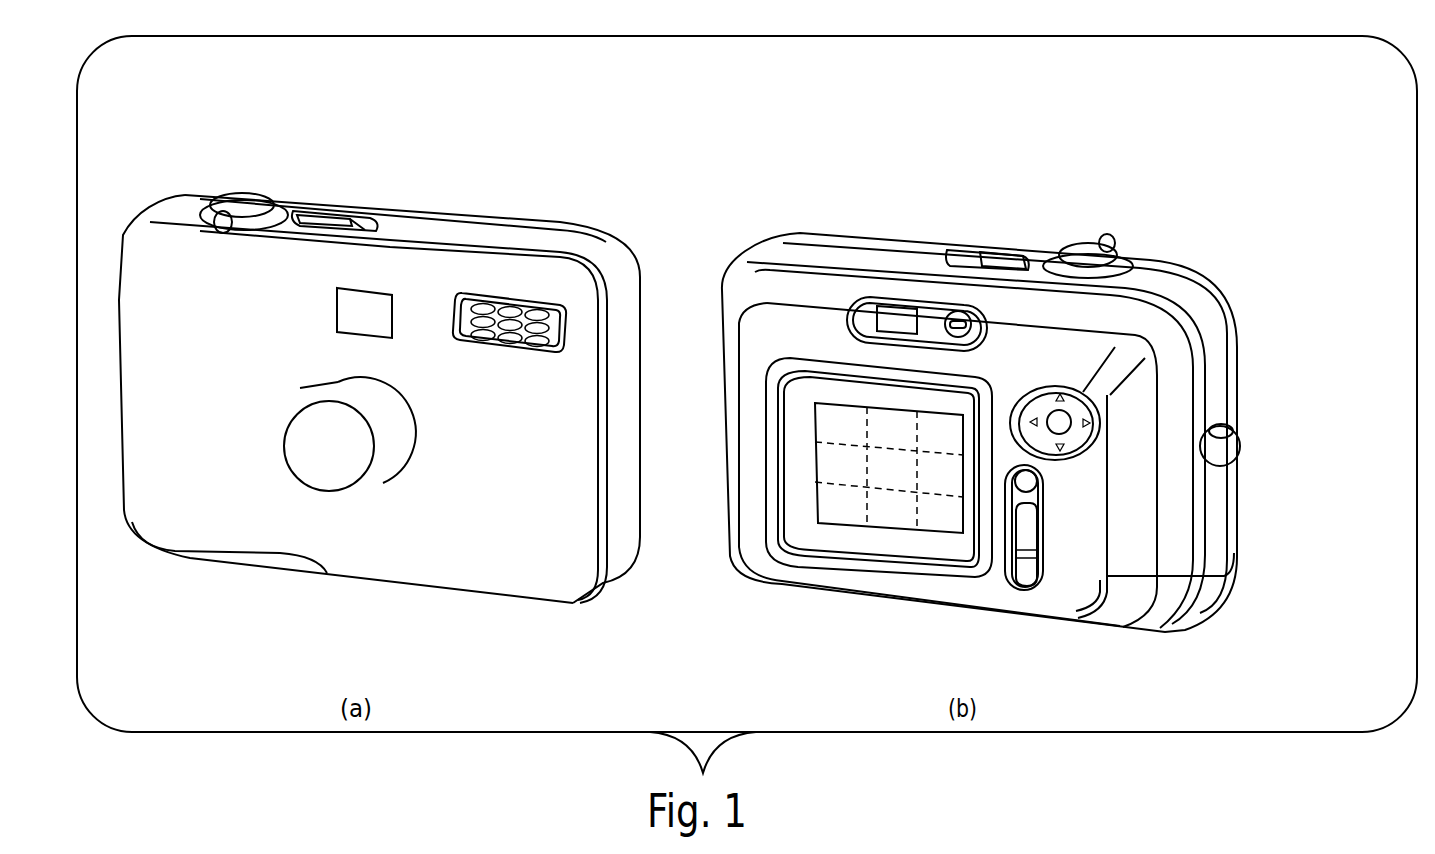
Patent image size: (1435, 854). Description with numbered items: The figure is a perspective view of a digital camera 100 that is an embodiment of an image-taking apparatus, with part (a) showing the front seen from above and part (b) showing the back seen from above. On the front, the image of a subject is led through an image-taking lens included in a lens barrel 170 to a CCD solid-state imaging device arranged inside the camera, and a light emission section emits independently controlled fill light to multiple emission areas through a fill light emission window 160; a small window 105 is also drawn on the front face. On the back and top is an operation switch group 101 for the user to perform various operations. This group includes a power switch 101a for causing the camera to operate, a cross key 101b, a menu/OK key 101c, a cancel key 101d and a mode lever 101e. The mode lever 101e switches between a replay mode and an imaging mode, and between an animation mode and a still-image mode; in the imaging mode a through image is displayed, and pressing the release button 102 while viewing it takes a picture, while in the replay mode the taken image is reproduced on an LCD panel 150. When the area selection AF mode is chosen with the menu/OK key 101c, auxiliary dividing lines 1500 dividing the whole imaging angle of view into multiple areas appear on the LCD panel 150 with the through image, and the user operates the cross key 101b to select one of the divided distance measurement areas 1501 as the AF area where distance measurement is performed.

The digital camera 100 is at (409, 153).
The operation switch group 101 is at (1322, 577).
The power switch 101a is at (323, 214).
The cross key 101b is at (1085, 446).
The menu/OK key 101c is at (1027, 512).
The cancel key 101d is at (1027, 580).
The mode lever 101e is at (214, 214).
The release button 102 is at (243, 200).
The flash window 105 is at (348, 303).
The LCD panel 150 is at (900, 523).
The auxiliary dividing lines 1500 is at (917, 465).
The divided distance measurement areas 1501 is at (933, 513).
The fill light emission window 160 is at (487, 340).
The lens barrel 170 is at (357, 392).